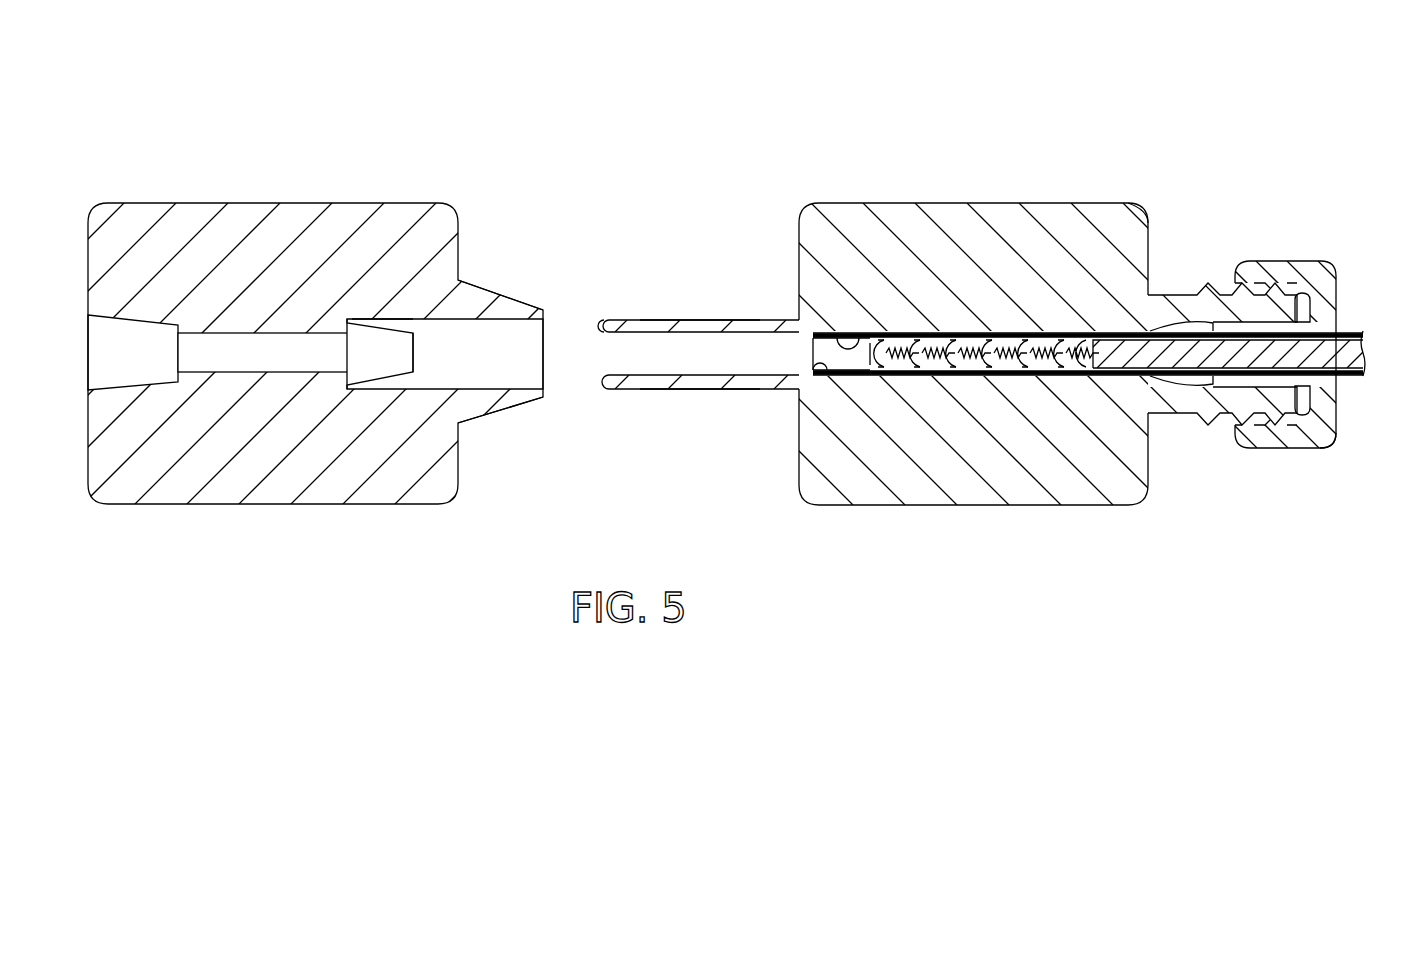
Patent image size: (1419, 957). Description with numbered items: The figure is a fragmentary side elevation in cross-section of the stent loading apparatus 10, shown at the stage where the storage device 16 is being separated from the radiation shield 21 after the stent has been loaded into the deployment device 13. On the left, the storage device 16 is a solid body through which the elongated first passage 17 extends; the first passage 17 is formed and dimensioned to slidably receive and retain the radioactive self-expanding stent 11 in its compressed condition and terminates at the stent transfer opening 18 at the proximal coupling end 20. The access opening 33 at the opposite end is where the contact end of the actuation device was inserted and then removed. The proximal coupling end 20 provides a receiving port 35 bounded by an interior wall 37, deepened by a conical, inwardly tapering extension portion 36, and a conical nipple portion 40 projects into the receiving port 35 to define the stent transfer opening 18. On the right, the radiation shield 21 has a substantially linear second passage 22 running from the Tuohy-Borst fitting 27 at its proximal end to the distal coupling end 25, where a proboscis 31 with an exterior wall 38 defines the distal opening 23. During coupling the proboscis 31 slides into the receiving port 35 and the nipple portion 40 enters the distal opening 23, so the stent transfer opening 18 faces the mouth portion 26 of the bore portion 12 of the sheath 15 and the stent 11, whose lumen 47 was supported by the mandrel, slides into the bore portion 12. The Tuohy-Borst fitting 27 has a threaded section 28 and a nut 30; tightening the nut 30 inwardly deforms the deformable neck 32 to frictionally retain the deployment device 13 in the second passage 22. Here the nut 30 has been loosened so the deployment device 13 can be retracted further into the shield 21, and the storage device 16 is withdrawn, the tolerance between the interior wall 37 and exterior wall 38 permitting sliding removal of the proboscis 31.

The stent loading apparatus 10 is at (709, 322).
The storage device 16 is at (374, 373).
The access opening 33 is at (137, 364).
The first passage 17 is at (296, 367).
The receiving port 35 is at (493, 366).
The proximal coupling end 20 is at (426, 320).
The nipple portion 40 is at (398, 320).
The stent transfer opening 18 is at (403, 372).
The extension portion 36 is at (482, 303).
The interior wall 37 is at (493, 381).
The distal coupling end 25 is at (698, 353).
The second passage 22 is at (719, 366).
The distal opening 23 is at (602, 337).
The proboscis 31 is at (696, 323).
The exterior wall 38 is at (661, 392).
The radiation shield 21 is at (959, 345).
The mouth portion 26 is at (820, 370).
The bore portion 12 is at (848, 328).
The sheath 15 is at (957, 345).
The lumen 47 is at (866, 345).
The self-expanding stent 11 is at (952, 380).
The threaded section 28 is at (1222, 285).
The deformable neck 32 is at (1222, 398).
The nut 30 is at (1229, 392).
The Tuohy-Borst fitting 27 is at (1330, 452).
The deployment device 13 is at (1360, 323).